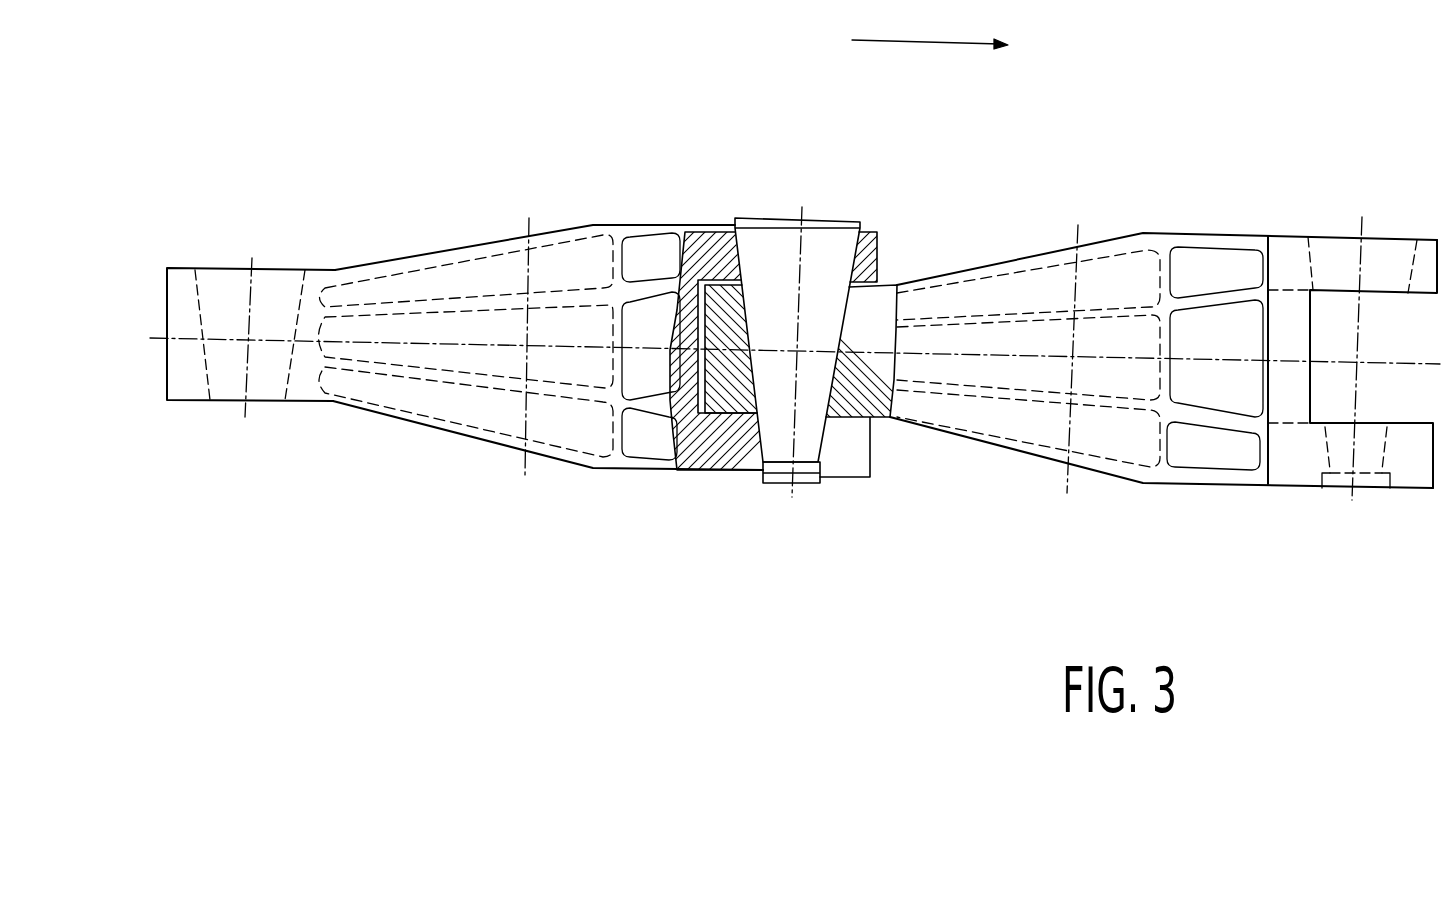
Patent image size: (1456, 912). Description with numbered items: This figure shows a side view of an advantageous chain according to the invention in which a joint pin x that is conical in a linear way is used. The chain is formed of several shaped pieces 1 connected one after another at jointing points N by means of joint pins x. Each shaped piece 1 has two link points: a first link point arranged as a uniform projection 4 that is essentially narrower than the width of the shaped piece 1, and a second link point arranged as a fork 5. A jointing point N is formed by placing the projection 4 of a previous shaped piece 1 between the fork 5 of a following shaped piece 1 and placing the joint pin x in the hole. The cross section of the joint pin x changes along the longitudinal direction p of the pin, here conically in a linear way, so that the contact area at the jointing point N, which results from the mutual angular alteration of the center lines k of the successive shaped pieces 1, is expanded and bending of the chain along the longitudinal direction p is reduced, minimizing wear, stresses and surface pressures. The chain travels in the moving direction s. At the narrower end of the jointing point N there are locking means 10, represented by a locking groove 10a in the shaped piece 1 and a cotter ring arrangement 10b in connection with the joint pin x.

The shaped piece 1 is at (577, 253).
The projection 4 is at (203, 403).
The fork 5 is at (1418, 222).
The locking means 10 is at (812, 502).
The locking groove 10a is at (754, 478).
The cotter ring arrangement 10b is at (800, 468).
The center line k is at (595, 345).
The jointing point N is at (893, 220).
The longitudinal direction of the joint pins p is at (797, 317).
The moving direction of the chain s is at (910, 42).
The joint pin x is at (720, 473).